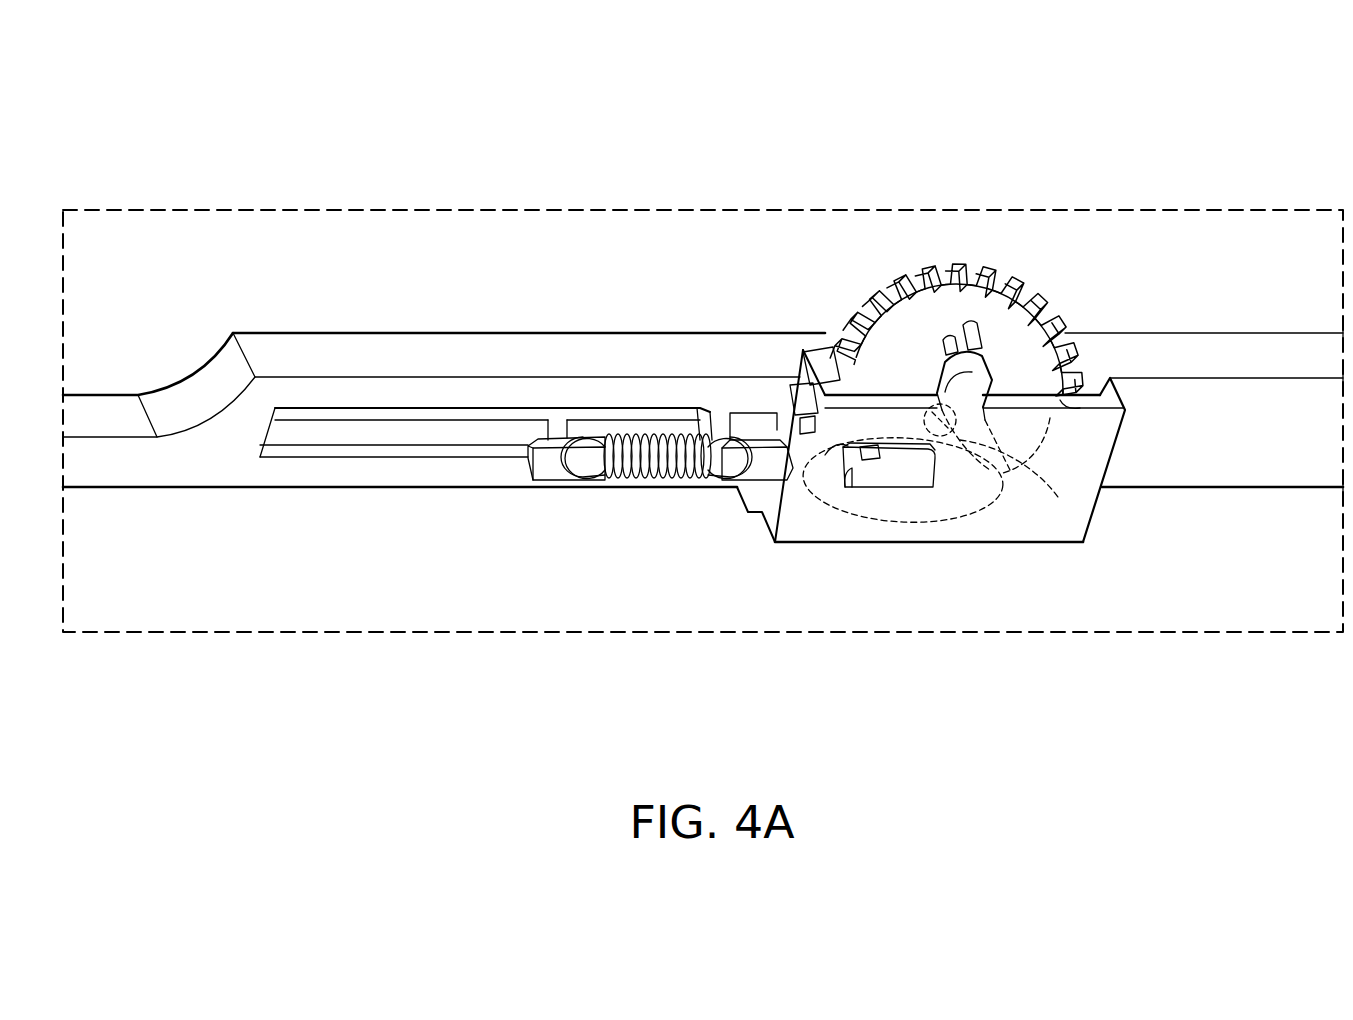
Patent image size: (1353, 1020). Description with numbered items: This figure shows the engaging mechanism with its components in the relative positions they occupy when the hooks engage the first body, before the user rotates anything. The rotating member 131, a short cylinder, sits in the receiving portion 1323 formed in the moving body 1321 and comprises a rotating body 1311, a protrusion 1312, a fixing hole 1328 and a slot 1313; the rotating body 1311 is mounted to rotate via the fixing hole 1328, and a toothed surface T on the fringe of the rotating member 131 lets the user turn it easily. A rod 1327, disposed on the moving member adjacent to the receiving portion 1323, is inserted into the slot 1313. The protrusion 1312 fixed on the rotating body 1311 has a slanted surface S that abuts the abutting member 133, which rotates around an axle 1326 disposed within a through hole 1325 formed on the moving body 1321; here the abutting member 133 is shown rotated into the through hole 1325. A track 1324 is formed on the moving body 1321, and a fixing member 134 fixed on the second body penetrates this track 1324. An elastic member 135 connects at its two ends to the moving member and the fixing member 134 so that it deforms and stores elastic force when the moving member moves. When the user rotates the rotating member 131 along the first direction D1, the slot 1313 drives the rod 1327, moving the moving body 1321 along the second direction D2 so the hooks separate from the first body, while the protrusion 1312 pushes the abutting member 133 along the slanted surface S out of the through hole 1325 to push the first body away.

The rotating member 131 is at (990, 78).
The rotating body 1311 is at (915, 300).
The protrusion 1312 is at (880, 367).
The slot 1313 is at (970, 333).
The moving body 1321 is at (432, 333).
The receiving portion 1323 is at (1090, 380).
The track 1324 is at (345, 425).
The through hole 1325 is at (833, 407).
The axle 1326 is at (843, 456).
The rod 1327 is at (947, 333).
The fixing hole 1328 is at (992, 460).
The abutting member 133 is at (908, 470).
The fixing member 134 is at (548, 472).
The elastic member 135 is at (677, 460).
The toothed surface T is at (872, 455).
The slanted surface S is at (1003, 473).
The first direction D1 is at (1010, 240).
The second direction D2 is at (1276, 527).